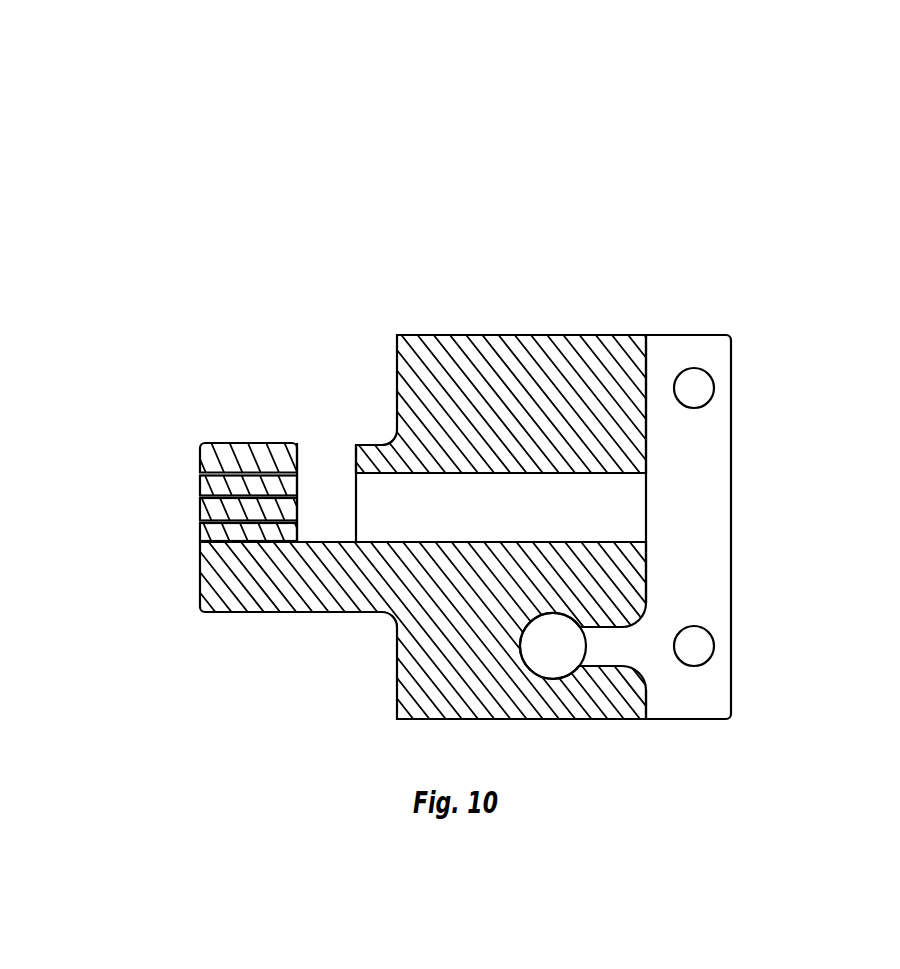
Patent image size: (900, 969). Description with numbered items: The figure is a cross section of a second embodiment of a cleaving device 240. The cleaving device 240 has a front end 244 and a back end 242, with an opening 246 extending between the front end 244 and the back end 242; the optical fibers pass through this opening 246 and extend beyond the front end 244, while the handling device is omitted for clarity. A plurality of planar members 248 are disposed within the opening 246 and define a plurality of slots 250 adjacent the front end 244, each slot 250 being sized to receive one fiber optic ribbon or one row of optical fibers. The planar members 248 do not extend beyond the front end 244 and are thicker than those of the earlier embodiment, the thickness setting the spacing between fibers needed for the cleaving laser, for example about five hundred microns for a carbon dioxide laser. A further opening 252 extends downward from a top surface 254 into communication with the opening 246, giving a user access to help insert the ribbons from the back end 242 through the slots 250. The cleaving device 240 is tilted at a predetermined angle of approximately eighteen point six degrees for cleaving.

The cleaving device 240 is at (469, 392).
The back end 242 is at (790, 417).
The front end 244 is at (200, 576).
The opening 246 is at (620, 502).
The planar members 248 is at (200, 530).
The slots 250 is at (203, 498).
The opening 252 is at (328, 479).
The top surface 254 is at (237, 443).